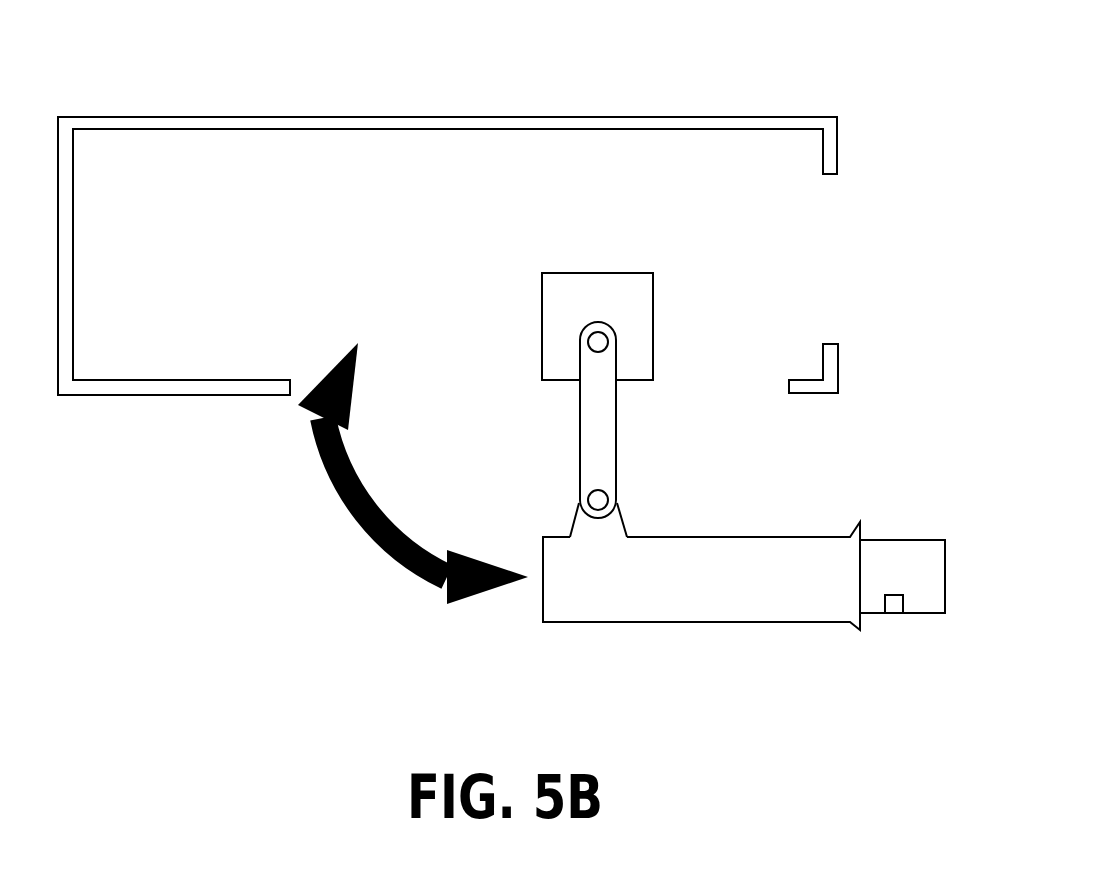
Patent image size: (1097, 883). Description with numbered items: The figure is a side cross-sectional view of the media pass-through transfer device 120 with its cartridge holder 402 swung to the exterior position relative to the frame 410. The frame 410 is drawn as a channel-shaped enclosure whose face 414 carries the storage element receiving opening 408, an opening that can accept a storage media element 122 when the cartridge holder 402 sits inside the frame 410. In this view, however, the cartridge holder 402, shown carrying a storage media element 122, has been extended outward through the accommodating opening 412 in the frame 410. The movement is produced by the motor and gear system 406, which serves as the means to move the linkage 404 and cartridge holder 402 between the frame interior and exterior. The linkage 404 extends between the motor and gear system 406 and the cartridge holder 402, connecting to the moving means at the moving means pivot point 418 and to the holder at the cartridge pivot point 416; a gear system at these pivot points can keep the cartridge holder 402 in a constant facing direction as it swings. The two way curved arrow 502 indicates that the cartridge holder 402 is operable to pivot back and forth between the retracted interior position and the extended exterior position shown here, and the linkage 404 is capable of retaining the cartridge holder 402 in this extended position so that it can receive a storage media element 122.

The media pass-through transfer device 120 is at (457, 62).
The frame 410 is at (653, 116).
The face 414 is at (845, 151).
The storage element receiving opening 408 is at (828, 283).
The motor and gear system 406 is at (653, 320).
The linkage 404 is at (616, 402).
The moving means pivot point 418 is at (584, 317).
The cartridge pivot point 416 is at (570, 500).
The cartridge holder 402 is at (710, 537).
The storage media element 122 is at (930, 613).
The accommodating opening 412 is at (486, 405).
The two way curved arrow 502 is at (317, 470).